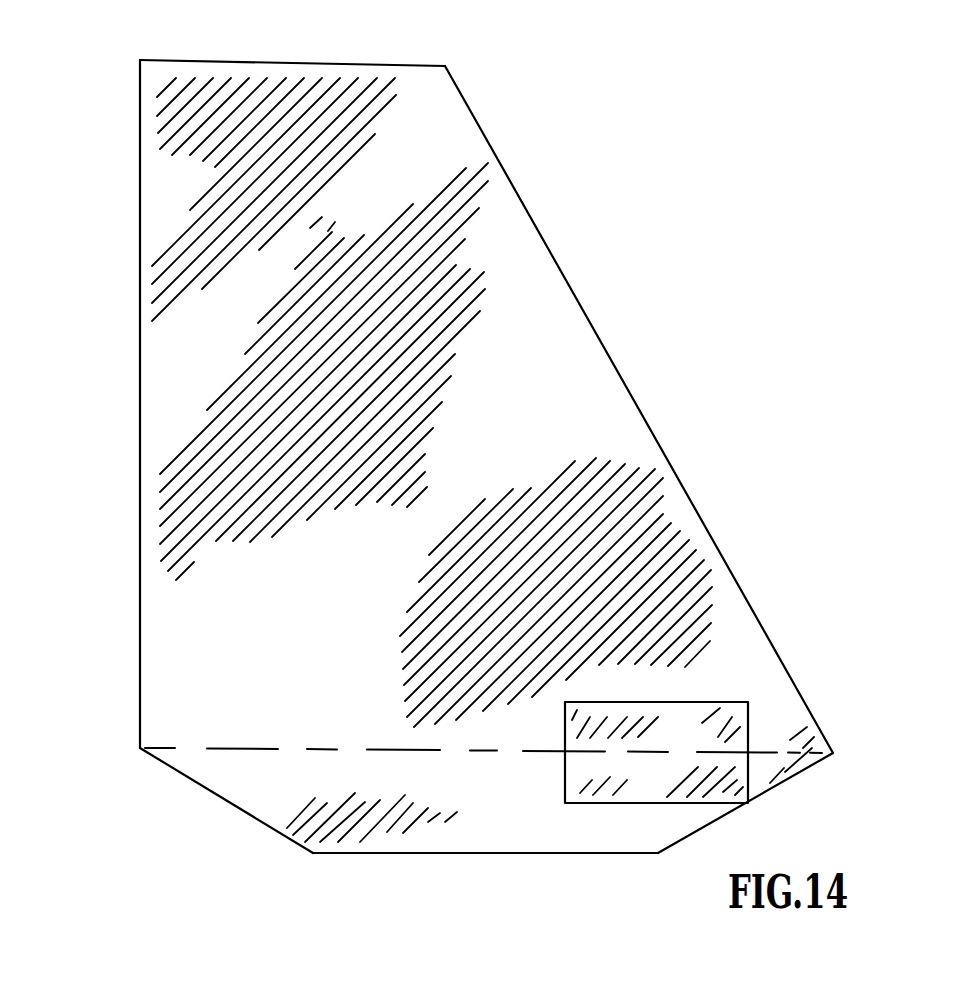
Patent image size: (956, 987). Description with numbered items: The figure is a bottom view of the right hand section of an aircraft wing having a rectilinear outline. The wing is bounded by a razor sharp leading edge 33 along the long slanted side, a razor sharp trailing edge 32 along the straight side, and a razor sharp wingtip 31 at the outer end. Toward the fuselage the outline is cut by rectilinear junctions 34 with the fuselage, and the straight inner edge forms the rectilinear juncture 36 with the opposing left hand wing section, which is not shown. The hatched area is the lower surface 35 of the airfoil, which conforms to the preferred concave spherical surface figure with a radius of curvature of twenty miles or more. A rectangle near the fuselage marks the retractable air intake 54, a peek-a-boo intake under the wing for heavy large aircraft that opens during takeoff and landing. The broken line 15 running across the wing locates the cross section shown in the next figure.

The wingtip 31 is at (294, 63).
The trailing edge 32 is at (140, 392).
The leading edge 33 is at (673, 463).
The rectilinear junctions 34 is at (201, 787).
The lower surface 35 is at (483, 258).
The rectilinear juncture 36 is at (477, 854).
The retractable air intake 54 is at (733, 714).
The section line 15- 15 is at (112, 801).